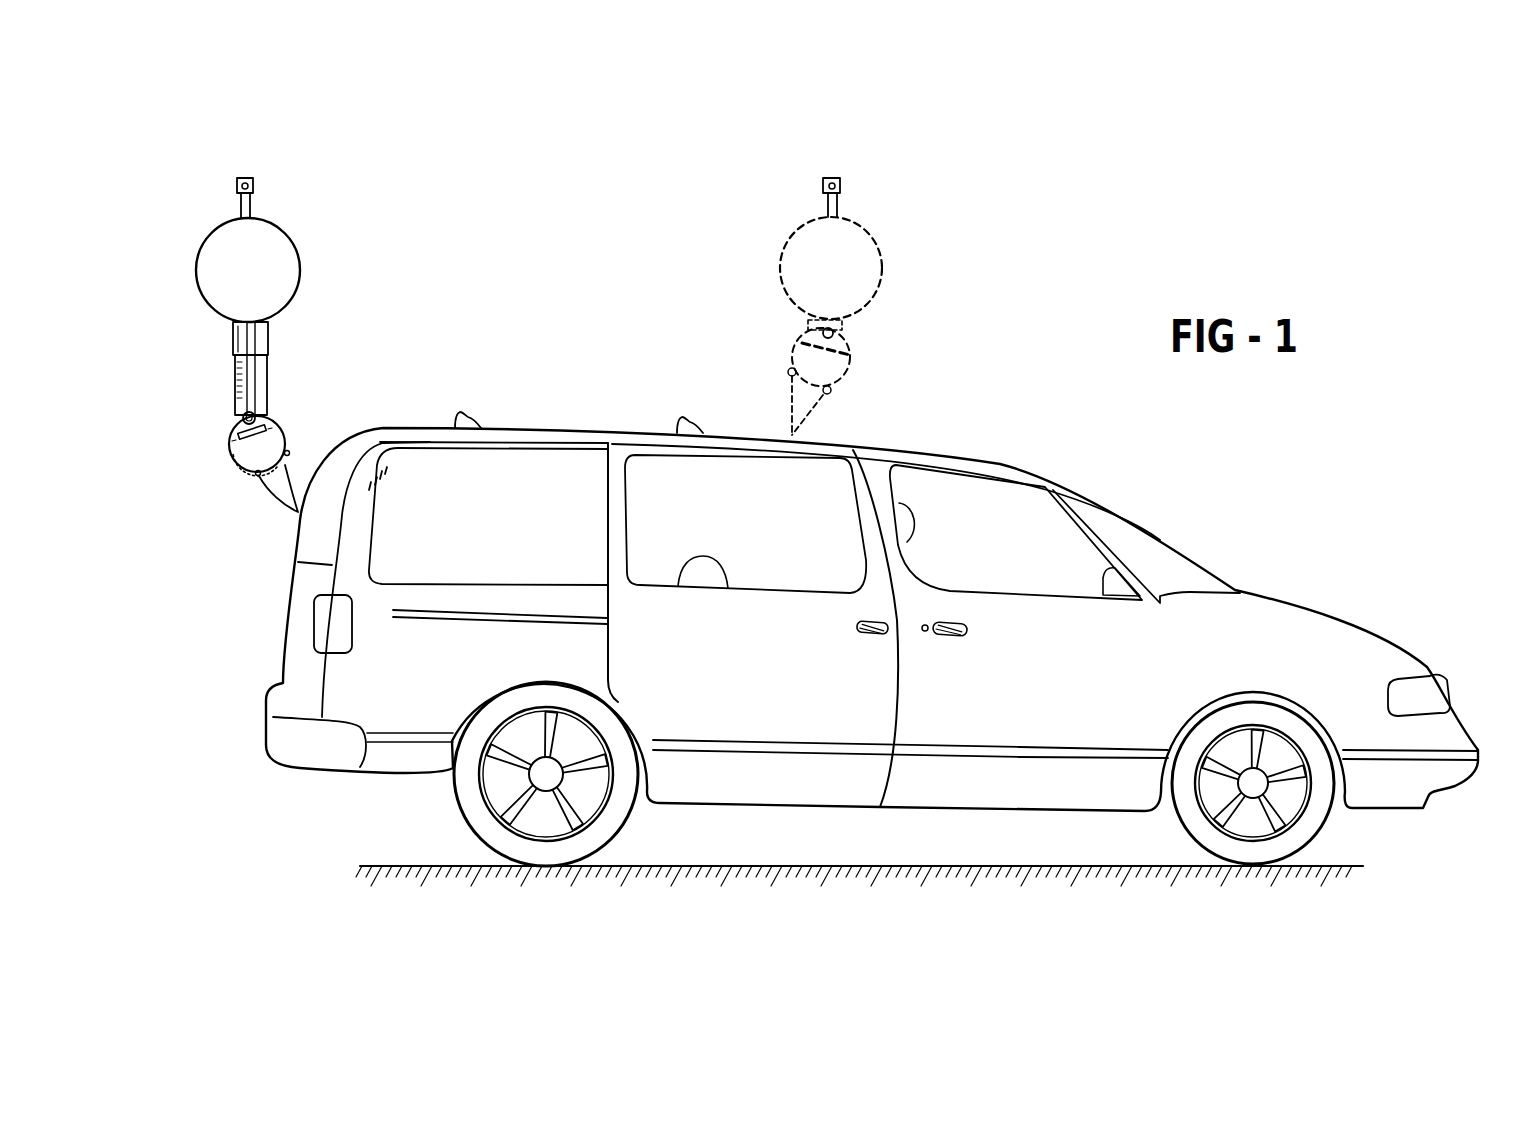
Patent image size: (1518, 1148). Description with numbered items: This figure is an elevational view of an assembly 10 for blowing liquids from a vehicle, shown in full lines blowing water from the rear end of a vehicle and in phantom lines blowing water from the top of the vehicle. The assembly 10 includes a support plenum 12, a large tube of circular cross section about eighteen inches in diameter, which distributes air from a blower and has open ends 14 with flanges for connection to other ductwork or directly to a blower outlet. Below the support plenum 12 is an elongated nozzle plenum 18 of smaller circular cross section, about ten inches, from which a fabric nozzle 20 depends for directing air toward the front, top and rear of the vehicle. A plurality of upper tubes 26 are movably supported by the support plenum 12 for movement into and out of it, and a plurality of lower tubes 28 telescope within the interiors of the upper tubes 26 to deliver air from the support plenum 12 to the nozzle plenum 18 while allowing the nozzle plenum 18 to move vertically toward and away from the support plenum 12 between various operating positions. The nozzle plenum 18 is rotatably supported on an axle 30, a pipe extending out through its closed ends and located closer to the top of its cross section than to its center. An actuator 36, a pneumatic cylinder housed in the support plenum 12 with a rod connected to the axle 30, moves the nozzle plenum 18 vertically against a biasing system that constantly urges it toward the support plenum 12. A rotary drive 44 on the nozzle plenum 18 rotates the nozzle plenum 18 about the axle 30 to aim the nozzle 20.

The assembly 10 is at (343, 240).
The support plenum 12 is at (266, 224).
The open ends 14 is at (882, 272).
The nozzle plenum 18 is at (287, 435).
The nozzle 20 is at (280, 492).
The upper tubes 26 is at (268, 333).
The lower tubes 28 is at (268, 372).
The axle 30 is at (268, 410).
The actuator 36 is at (250, 368).
The rotary drive 44 is at (240, 428).